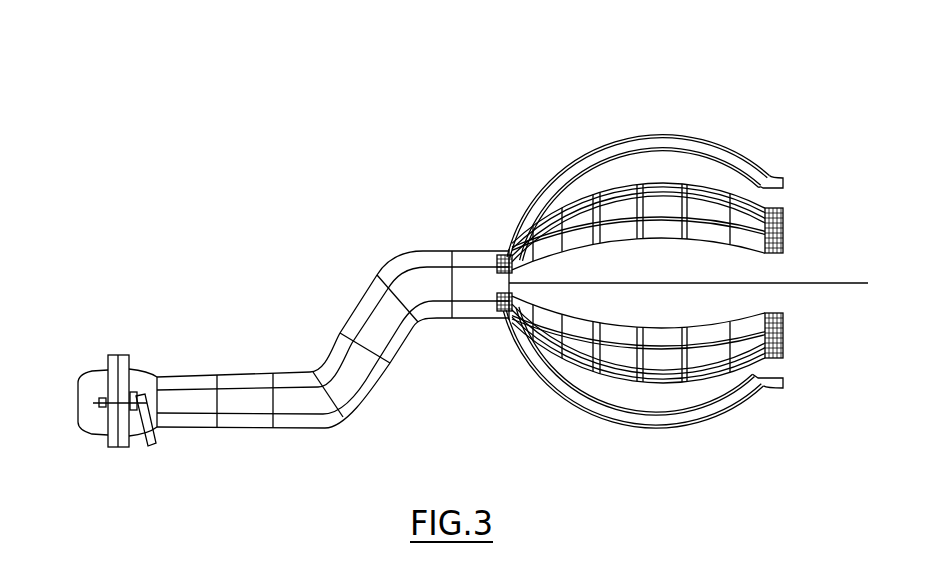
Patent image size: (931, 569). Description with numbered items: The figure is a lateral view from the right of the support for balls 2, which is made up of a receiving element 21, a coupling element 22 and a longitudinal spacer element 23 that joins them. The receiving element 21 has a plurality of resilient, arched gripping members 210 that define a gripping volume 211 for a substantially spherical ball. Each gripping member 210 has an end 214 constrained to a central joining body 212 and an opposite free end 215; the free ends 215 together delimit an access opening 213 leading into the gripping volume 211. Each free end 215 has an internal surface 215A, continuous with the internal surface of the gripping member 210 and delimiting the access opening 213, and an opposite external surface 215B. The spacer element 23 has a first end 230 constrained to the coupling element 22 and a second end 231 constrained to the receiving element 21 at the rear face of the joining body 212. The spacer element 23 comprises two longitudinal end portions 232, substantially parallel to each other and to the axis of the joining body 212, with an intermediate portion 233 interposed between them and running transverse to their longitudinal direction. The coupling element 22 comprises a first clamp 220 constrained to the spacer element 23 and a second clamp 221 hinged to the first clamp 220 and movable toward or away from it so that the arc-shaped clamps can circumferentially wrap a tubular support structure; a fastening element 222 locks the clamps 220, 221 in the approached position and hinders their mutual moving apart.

The support for balls 2 is at (302, 195).
The receiving element 21 is at (719, 108).
The coupling element 22 is at (114, 340).
The longitudinal spacer element 23 is at (422, 216).
The gripping member 210 is at (628, 148).
The gripping volume 211 is at (790, 318).
The joining body 212 is at (475, 250).
The access opening 213 is at (727, 273).
The end 214 is at (505, 254).
The free end 215 is at (785, 180).
The internal surface 215A is at (683, 425).
The external surface 215B is at (765, 392).
The first clamp 220 is at (130, 357).
The second clamp 221 is at (80, 428).
The fastening element 222 is at (152, 448).
The first end 230 is at (212, 432).
The second end 231 is at (505, 322).
The longitudinal end portion 232 is at (290, 432).
The intermediate portion 233 is at (373, 382).